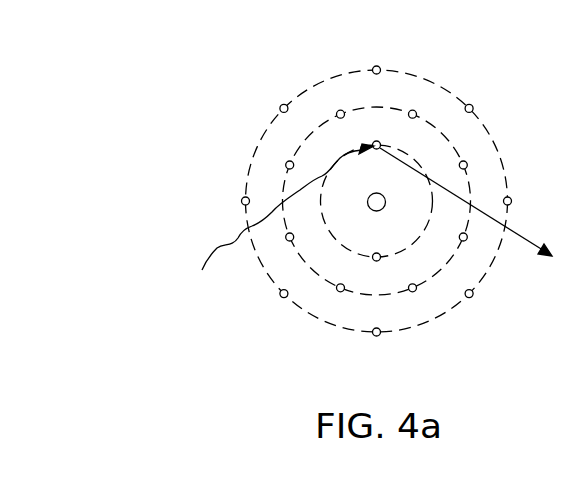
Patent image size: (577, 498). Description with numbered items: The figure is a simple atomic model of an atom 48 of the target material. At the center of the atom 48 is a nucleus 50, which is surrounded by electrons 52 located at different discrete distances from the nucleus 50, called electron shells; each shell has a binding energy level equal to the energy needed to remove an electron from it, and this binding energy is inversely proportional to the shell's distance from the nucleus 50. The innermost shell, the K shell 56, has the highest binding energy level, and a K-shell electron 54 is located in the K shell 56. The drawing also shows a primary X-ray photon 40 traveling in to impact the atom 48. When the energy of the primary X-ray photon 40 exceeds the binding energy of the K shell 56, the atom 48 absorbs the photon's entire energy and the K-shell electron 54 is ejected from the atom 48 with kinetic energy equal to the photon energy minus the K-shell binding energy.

The primary X-ray photon 40 is at (217, 248).
The atom 48 is at (492, 64).
The nucleus 50 is at (383, 209).
The electrons 52 is at (372, 333).
The K-shell electron 54 is at (374, 141).
The K shell 56 is at (335, 240).